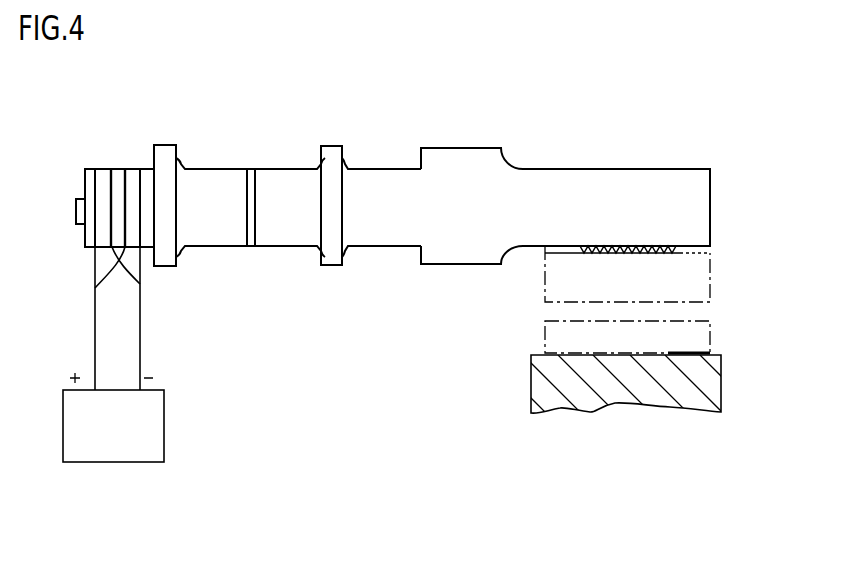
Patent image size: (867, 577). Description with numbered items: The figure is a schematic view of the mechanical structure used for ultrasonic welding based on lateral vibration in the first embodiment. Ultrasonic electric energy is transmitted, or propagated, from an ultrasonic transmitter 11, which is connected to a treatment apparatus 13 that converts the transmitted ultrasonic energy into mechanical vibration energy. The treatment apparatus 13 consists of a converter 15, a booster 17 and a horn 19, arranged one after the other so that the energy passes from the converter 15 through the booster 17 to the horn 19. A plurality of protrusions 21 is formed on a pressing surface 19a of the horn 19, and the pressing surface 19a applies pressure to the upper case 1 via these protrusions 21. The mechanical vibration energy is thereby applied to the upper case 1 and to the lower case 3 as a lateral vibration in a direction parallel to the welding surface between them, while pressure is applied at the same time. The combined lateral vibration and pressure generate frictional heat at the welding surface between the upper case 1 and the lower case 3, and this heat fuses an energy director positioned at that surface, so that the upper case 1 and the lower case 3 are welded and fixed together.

The upper case 1 is at (651, 271).
The lower case 3 is at (703, 343).
The ultrasonic transmitter 11 is at (105, 462).
The treatment apparatus 13 is at (422, 199).
The converter 15 is at (233, 247).
The booster 17 is at (385, 247).
The horn 19 is at (567, 169).
The pressing surface 19a is at (704, 247).
The protrusions 21 is at (657, 254).